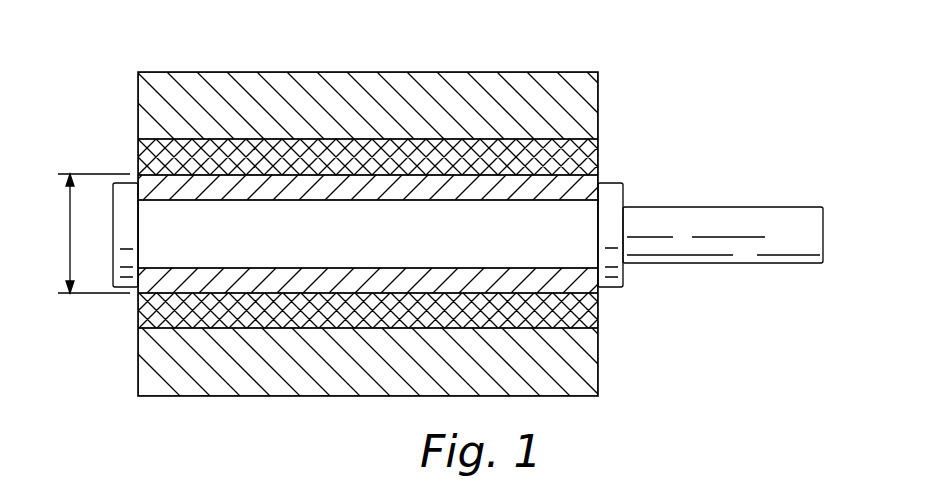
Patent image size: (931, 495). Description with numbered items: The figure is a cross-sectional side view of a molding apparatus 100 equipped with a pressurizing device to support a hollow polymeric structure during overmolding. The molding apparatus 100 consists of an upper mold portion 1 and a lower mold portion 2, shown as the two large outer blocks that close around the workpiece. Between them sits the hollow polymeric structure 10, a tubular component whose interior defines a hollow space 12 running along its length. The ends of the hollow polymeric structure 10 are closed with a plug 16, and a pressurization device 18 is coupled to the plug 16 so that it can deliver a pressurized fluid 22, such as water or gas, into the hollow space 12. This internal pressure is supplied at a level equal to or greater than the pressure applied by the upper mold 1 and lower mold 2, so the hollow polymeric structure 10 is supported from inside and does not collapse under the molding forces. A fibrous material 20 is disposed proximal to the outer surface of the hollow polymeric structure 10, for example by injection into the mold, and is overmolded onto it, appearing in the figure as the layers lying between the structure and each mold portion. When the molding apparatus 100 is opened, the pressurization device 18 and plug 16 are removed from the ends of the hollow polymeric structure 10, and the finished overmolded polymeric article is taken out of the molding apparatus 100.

The molding apparatus 100 is at (552, 68).
The upper mold portion 1 is at (220, 80).
The lower mold portion 2 is at (258, 373).
The hollow polymeric structure 10 is at (94, 233).
The hollow space 12 is at (347, 238).
The plug 16 is at (625, 190).
The pressurization device 18 is at (745, 206).
The fibrous material 20 is at (172, 158).
The pressurized fluid 22 is at (262, 242).